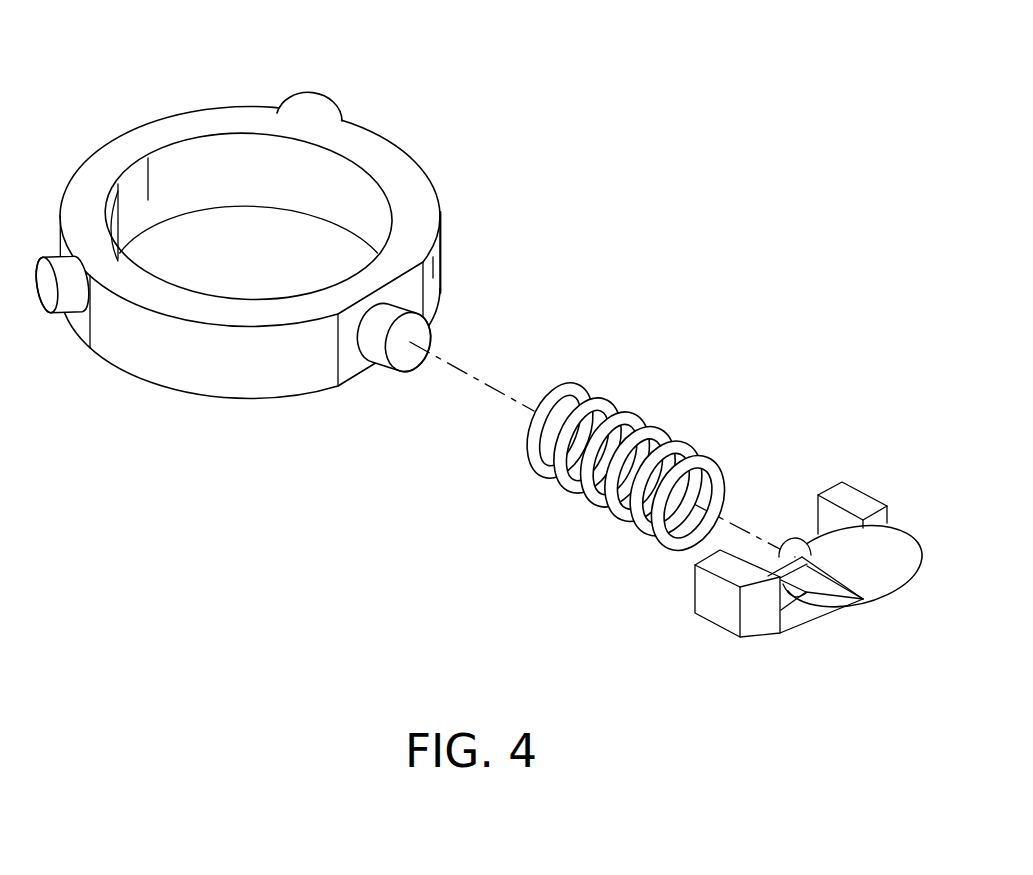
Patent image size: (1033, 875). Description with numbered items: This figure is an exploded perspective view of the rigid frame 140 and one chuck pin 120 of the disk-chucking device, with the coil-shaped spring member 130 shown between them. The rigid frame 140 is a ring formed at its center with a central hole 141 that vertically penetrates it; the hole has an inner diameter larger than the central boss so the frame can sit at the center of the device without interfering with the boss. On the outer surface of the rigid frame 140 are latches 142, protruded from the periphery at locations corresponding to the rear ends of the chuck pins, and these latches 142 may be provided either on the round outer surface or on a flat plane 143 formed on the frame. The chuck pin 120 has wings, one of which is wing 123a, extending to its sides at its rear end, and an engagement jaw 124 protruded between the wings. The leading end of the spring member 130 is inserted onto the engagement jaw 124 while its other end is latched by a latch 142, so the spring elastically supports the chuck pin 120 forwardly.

The chuck pin 120 is at (883, 572).
The wing 123a is at (866, 492).
The engagement jaw 124 is at (795, 547).
The spring member 130 is at (590, 507).
The rigid frame 140 is at (430, 208).
The central hole 141 is at (352, 192).
The latch 142 is at (305, 100).
The flat plane 143 is at (244, 108).